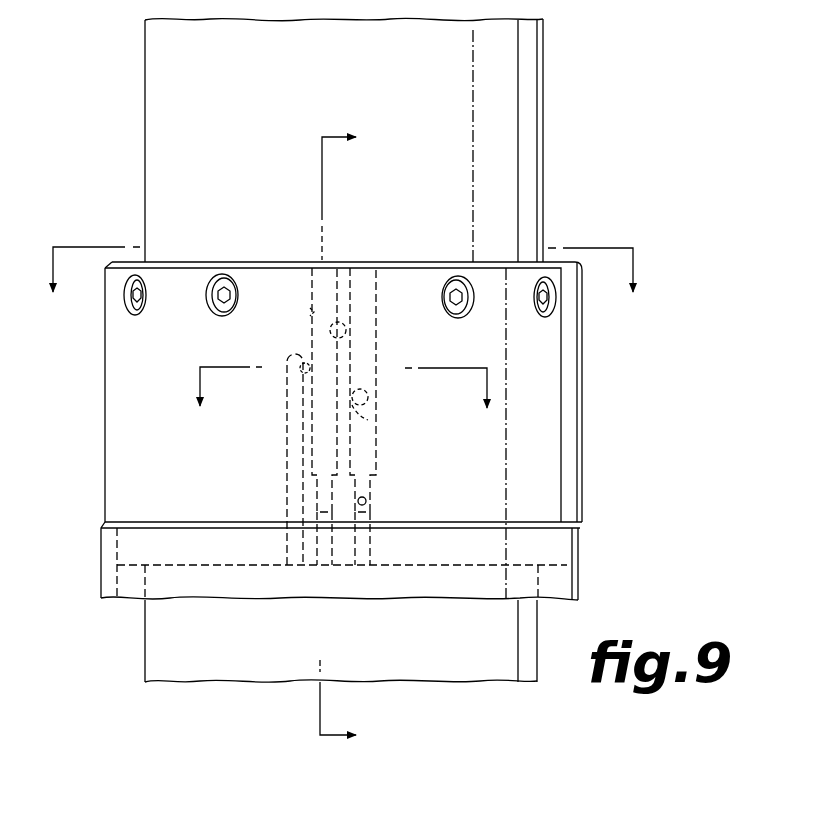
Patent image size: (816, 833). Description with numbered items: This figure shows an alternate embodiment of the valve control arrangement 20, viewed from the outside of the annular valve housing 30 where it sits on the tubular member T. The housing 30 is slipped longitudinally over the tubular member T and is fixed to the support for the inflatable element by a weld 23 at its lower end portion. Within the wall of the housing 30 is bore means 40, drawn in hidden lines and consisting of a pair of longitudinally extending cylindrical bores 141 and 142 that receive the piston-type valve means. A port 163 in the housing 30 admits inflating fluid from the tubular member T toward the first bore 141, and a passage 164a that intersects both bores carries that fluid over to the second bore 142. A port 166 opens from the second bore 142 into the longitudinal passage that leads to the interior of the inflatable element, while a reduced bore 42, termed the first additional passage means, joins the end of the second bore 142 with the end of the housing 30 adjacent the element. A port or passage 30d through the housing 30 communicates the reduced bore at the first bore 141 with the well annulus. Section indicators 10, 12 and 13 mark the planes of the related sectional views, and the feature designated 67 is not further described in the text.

The tubular member T is at (545, 128).
The section line 10- 10 is at (341, 284).
The section line 12- 12 is at (355, 437).
The section line 13- 13 is at (341, 402).
The valve control arrangement 20 is at (104, 456).
The weld 23 is at (582, 535).
The annular valve housing means 30 is at (584, 451).
The port or passage 30d is at (366, 500).
The bore means 40 is at (377, 366).
The first additional passage means 42 is at (334, 549).
The hook slot 67 is at (289, 546).
The first cylindrical bore 141 is at (368, 405).
The second cylindrical bore 142 is at (310, 312).
The port means 163 is at (368, 421).
The passage 164a is at (347, 329).
The port 166 is at (300, 355).